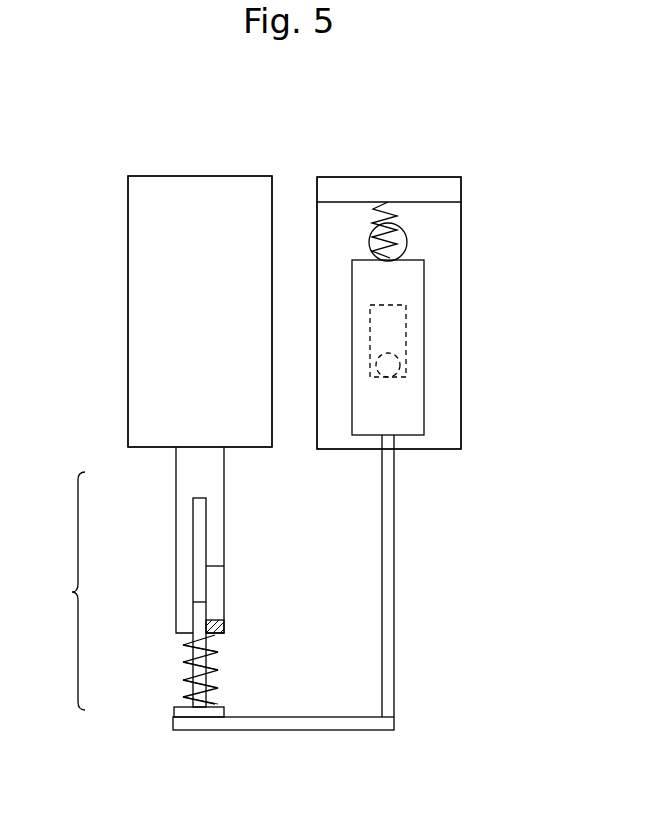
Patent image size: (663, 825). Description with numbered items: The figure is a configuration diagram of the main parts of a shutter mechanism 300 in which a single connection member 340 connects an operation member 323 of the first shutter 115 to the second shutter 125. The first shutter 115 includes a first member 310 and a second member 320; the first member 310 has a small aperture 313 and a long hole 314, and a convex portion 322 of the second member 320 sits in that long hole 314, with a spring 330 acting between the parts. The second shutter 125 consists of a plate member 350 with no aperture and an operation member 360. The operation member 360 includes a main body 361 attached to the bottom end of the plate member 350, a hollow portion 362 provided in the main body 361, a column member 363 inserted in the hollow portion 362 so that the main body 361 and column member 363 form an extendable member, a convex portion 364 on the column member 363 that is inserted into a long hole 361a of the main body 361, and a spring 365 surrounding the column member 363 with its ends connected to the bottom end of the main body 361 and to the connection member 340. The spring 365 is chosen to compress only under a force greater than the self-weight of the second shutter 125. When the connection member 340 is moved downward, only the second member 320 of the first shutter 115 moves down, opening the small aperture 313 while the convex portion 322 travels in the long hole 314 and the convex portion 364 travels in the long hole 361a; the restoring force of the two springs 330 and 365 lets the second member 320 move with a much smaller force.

The shutter mechanism 300 is at (421, 117).
The second shutter 125 is at (229, 174).
The first shutter 115 is at (351, 174).
The plate member 350 is at (128, 291).
The first member 310 is at (459, 396).
The spring 330 is at (383, 206).
The small aperture 313 is at (408, 243).
The second member 320 is at (425, 300).
The long hole 314 is at (408, 327).
The convex portion 322 is at (404, 366).
The operation member 323 is at (395, 579).
The connection member 340 is at (394, 723).
The operation member 360 is at (54, 591).
The main body 361 is at (178, 491).
The long hole 361a is at (215, 587).
The hollow portion 362 is at (197, 541).
The column member 363 is at (195, 619).
The convex portion 364 is at (224, 626).
The spring 365 is at (215, 666).